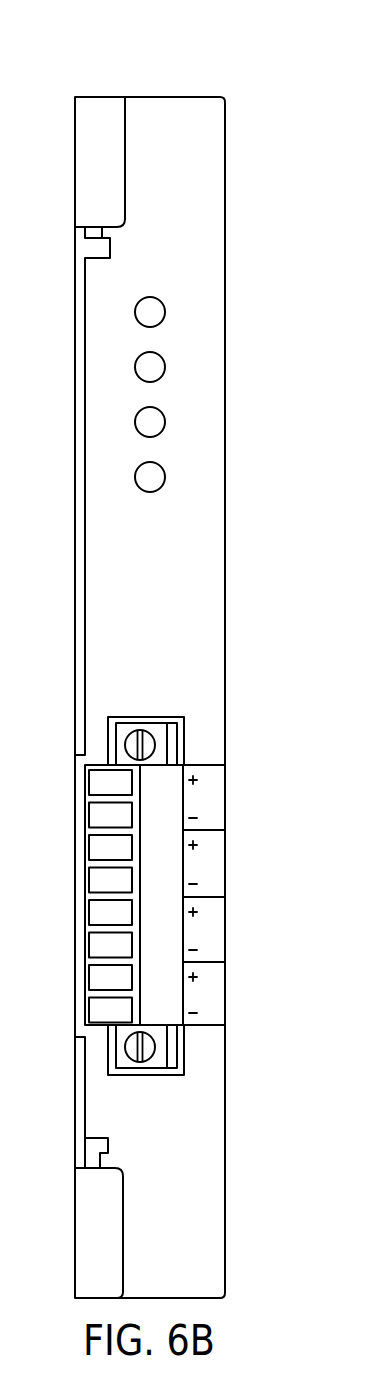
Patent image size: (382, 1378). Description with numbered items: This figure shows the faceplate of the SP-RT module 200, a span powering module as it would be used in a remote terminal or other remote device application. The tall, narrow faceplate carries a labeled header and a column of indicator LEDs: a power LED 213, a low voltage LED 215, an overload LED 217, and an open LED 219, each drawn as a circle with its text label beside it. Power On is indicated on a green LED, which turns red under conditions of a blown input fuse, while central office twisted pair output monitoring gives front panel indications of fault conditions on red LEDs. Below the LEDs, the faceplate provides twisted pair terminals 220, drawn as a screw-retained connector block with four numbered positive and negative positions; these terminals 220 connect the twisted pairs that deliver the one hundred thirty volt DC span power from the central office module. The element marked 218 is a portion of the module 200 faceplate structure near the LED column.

The SP-RT module 200 is at (124, 70).
The power LED 213 is at (140, 299).
The low voltage LED 215 is at (139, 355).
The overload LED 217 is at (139, 410).
The faceplate 218 is at (98, 277).
The open LED 219 is at (139, 465).
The twisted pair terminals 220 is at (230, 772).